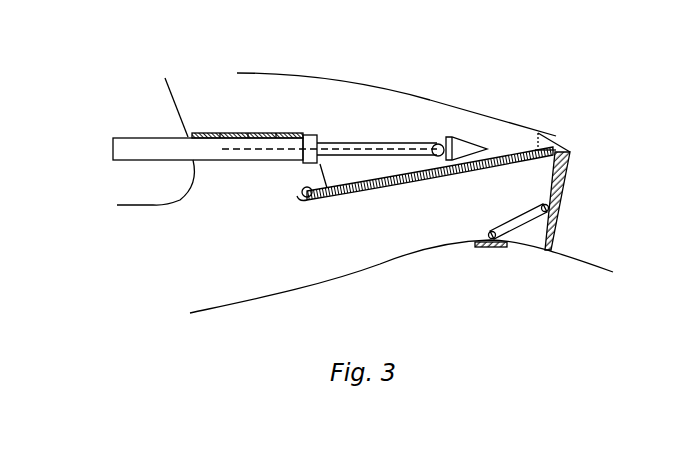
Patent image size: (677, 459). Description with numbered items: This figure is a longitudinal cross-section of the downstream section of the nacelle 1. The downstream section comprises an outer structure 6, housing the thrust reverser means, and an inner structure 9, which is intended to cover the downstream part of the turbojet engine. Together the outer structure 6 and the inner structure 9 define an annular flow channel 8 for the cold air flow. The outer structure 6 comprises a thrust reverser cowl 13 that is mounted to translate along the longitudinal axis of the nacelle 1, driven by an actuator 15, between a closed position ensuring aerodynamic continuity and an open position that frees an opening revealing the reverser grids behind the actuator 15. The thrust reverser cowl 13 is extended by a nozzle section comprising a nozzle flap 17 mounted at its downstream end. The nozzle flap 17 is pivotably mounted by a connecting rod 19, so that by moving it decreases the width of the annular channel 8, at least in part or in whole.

The nacelle 1 is at (277, 63).
The outer structure 6 is at (427, 101).
The annular flow channel 8 is at (315, 268).
The inner structure 9 is at (412, 258).
The thrust reverser cowl 13 is at (483, 113).
The actuator 15 is at (222, 150).
The nozzle flap 17 is at (568, 165).
The connecting rod 19 is at (522, 222).